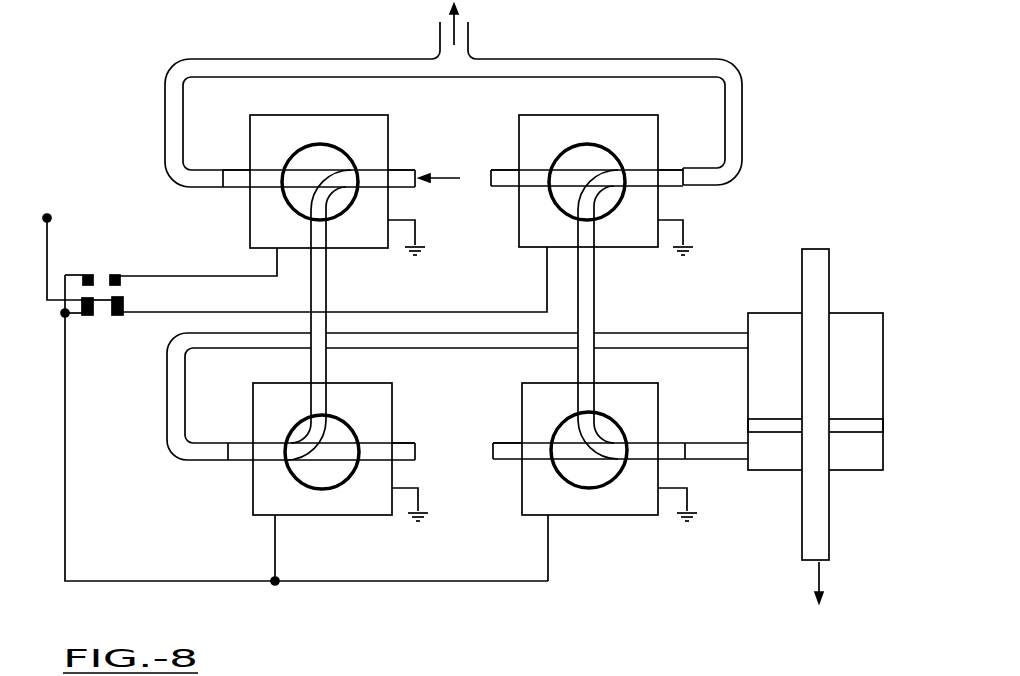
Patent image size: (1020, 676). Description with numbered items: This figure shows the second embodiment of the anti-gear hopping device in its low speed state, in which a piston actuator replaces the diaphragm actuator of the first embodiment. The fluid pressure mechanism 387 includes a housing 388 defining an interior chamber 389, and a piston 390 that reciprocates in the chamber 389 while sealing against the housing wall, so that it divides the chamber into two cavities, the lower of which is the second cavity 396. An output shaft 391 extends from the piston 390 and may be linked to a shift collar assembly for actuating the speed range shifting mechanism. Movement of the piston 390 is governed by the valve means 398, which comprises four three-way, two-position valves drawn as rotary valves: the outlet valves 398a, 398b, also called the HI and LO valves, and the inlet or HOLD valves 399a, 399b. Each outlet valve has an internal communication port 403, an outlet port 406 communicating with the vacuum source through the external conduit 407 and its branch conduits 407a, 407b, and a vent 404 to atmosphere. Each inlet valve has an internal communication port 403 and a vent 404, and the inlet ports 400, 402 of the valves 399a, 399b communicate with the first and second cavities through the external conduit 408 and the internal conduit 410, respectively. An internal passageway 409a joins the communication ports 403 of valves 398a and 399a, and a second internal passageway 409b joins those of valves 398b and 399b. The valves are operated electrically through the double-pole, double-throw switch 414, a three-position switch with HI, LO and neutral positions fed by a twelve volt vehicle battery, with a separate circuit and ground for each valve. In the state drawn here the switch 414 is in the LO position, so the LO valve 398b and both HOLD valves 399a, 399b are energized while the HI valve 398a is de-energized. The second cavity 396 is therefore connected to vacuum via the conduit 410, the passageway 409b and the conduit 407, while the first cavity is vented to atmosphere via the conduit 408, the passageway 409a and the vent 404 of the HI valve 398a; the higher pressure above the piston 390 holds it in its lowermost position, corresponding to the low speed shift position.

The fluid pressure mechanism 387 is at (781, 270).
The housing 388 is at (756, 472).
The interior chamber 389 is at (760, 385).
The piston 390 is at (748, 424).
The output shaft 391 is at (830, 270).
The second cavity 396 is at (847, 462).
The valve means 398 is at (638, 563).
The HI valve 398a is at (320, 115).
The LO valve 398b is at (597, 115).
The inlet valve 399a is at (376, 383).
The inlet valve 399b is at (556, 383).
The inlet port 400 is at (262, 462).
The inlet port 402 is at (674, 459).
The internal communication port 403 is at (327, 237).
The vent 404 is at (400, 170).
The outlet port 406 is at (240, 172).
The external conduit 407 is at (470, 38).
The branch conduit 407a is at (297, 59).
The branch conduit 407b is at (645, 59).
The external conduit 408 is at (167, 391).
The internal passageway 409a is at (327, 297).
The internal passageway 409b is at (595, 297).
The internal conduit 410 is at (719, 443).
The double-pole, double-throw switch 414 is at (107, 262).